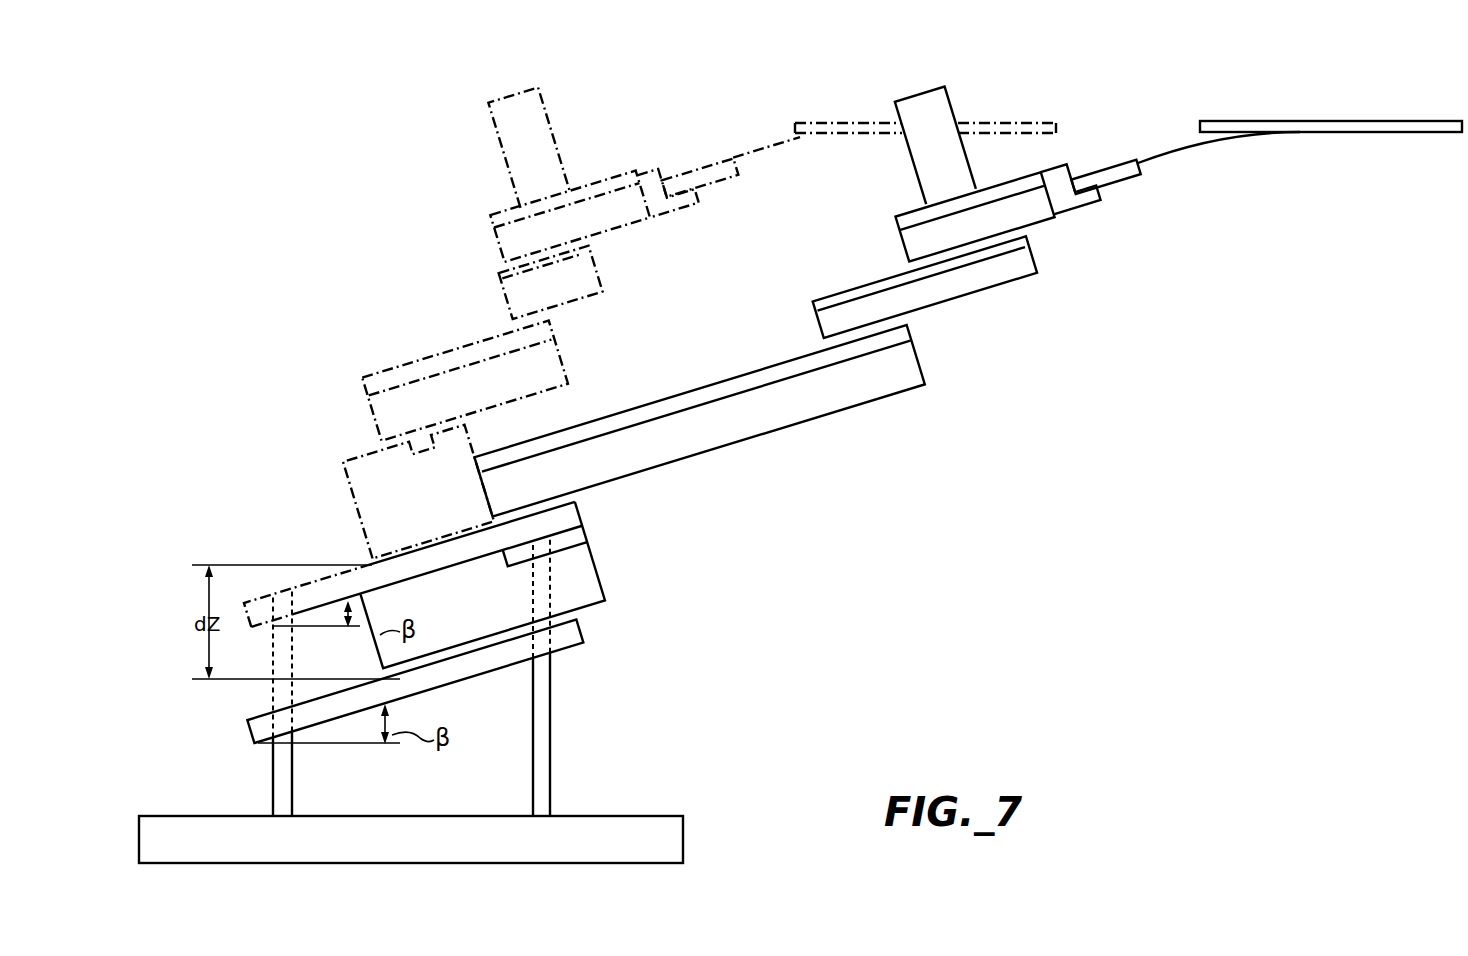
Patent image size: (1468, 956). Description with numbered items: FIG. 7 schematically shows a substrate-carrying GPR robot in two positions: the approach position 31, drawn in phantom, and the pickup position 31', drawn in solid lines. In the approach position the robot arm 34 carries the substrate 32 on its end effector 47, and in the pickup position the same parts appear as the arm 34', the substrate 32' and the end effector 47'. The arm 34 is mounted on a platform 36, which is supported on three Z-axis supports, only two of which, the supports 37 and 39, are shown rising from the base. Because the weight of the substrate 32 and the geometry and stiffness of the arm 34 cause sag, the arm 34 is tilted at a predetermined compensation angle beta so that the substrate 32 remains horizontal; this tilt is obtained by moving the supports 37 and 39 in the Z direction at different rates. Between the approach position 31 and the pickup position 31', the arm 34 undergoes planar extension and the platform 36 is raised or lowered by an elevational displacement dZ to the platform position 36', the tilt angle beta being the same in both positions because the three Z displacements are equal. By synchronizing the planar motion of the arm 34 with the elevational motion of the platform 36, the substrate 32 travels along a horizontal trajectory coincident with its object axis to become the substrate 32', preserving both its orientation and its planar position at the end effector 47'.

The approach position 31 is at (449, 440).
The pick up position 31' is at (704, 452).
The substrate 32 is at (925, 110).
The substrate in pickup position 32' is at (1300, 147).
The arm 34 is at (411, 474).
The arm in pickup position 34' is at (958, 602).
The platform 36 is at (436, 682).
The platform in pickup position 36' is at (401, 564).
The support 37 is at (273, 797).
The support 39 is at (553, 753).
The end effector 47 is at (632, 168).
The end effector in pickup position 47' is at (1004, 150).